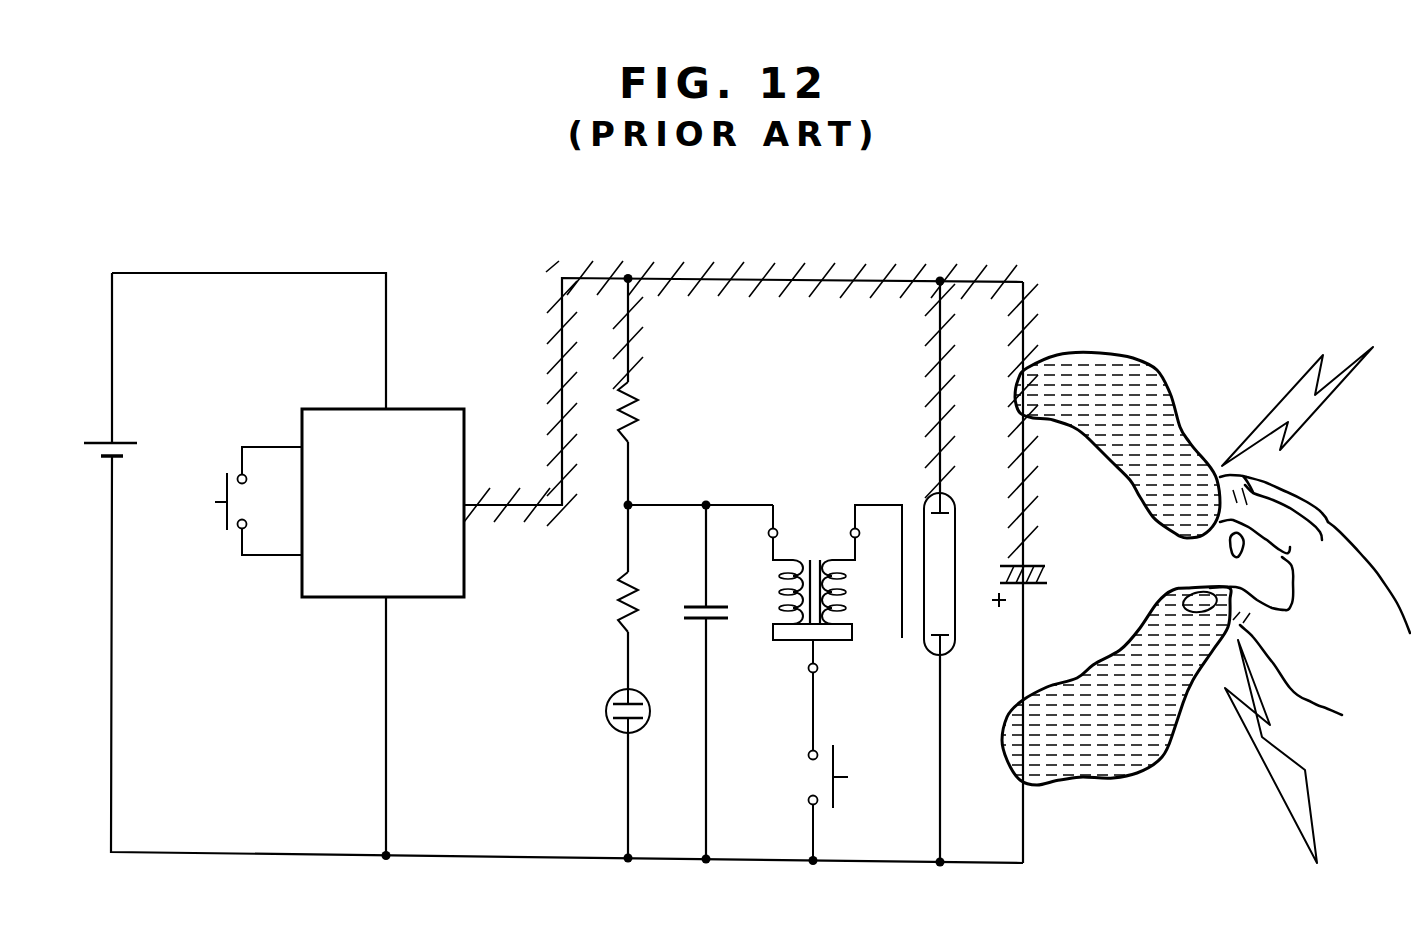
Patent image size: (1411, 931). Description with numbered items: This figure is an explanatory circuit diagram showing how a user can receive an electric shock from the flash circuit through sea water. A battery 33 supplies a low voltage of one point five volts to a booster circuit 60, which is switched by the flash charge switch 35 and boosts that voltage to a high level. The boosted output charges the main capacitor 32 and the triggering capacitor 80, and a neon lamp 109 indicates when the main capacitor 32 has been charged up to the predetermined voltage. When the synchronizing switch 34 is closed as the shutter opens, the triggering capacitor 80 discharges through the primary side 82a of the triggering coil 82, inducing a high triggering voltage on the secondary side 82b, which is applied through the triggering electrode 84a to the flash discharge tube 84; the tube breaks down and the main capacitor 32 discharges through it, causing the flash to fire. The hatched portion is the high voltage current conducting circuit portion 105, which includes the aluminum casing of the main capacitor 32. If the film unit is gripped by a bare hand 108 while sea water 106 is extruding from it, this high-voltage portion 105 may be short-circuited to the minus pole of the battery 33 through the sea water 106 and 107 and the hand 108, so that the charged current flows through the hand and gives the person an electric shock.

The main capacitor 32 is at (1040, 562).
The battery 33 is at (127, 440).
The synchronizing switch 34 is at (837, 762).
The flash charge switch 35 is at (222, 492).
The booster circuit 60 is at (430, 409).
The triggering capacitor 80 is at (718, 620).
The triggering coil 82 is at (814, 581).
The primary side of triggering coil 82a is at (777, 615).
The secondary side of triggering coil 82b is at (843, 622).
The flash discharge tube 84 is at (957, 633).
The triggering electrode 84a is at (902, 542).
The high voltage current conducting circuit portion 105 is at (785, 279).
The sea water 106 is at (1115, 367).
The wet cloth / water drop 107 is at (1122, 780).
The bare hand 108 is at (1327, 522).
The neon lamp 109 is at (605, 712).